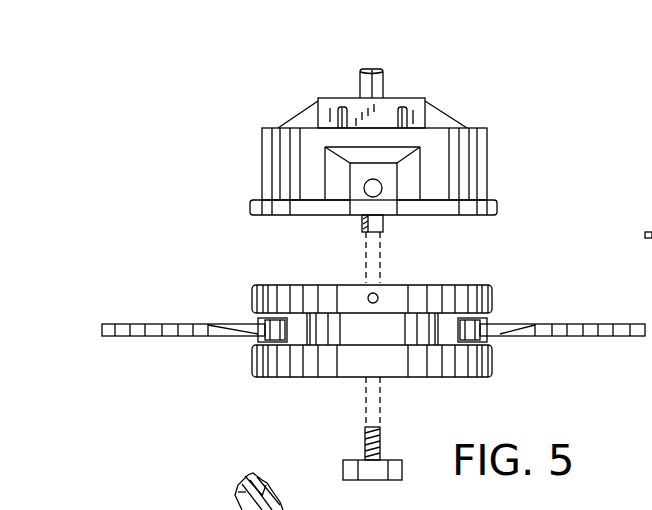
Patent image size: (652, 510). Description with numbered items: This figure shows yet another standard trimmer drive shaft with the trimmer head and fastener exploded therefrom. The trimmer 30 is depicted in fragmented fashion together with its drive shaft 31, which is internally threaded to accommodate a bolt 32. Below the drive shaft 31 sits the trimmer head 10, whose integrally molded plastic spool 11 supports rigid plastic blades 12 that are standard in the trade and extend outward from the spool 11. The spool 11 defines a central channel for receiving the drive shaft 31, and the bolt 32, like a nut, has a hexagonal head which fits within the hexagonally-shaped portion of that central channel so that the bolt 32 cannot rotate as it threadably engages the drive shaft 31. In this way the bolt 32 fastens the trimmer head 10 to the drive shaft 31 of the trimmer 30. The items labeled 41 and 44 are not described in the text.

The trimmer head 10 is at (205, 248).
The spool 11 is at (484, 279).
The rigid plastic blades 12 is at (553, 323).
The trimmer 30 is at (507, 141).
The drive shaft 31 is at (310, 239).
The bolt 32 is at (318, 444).
The element 41 is at (640, 207).
The cable 44 is at (305, 491).